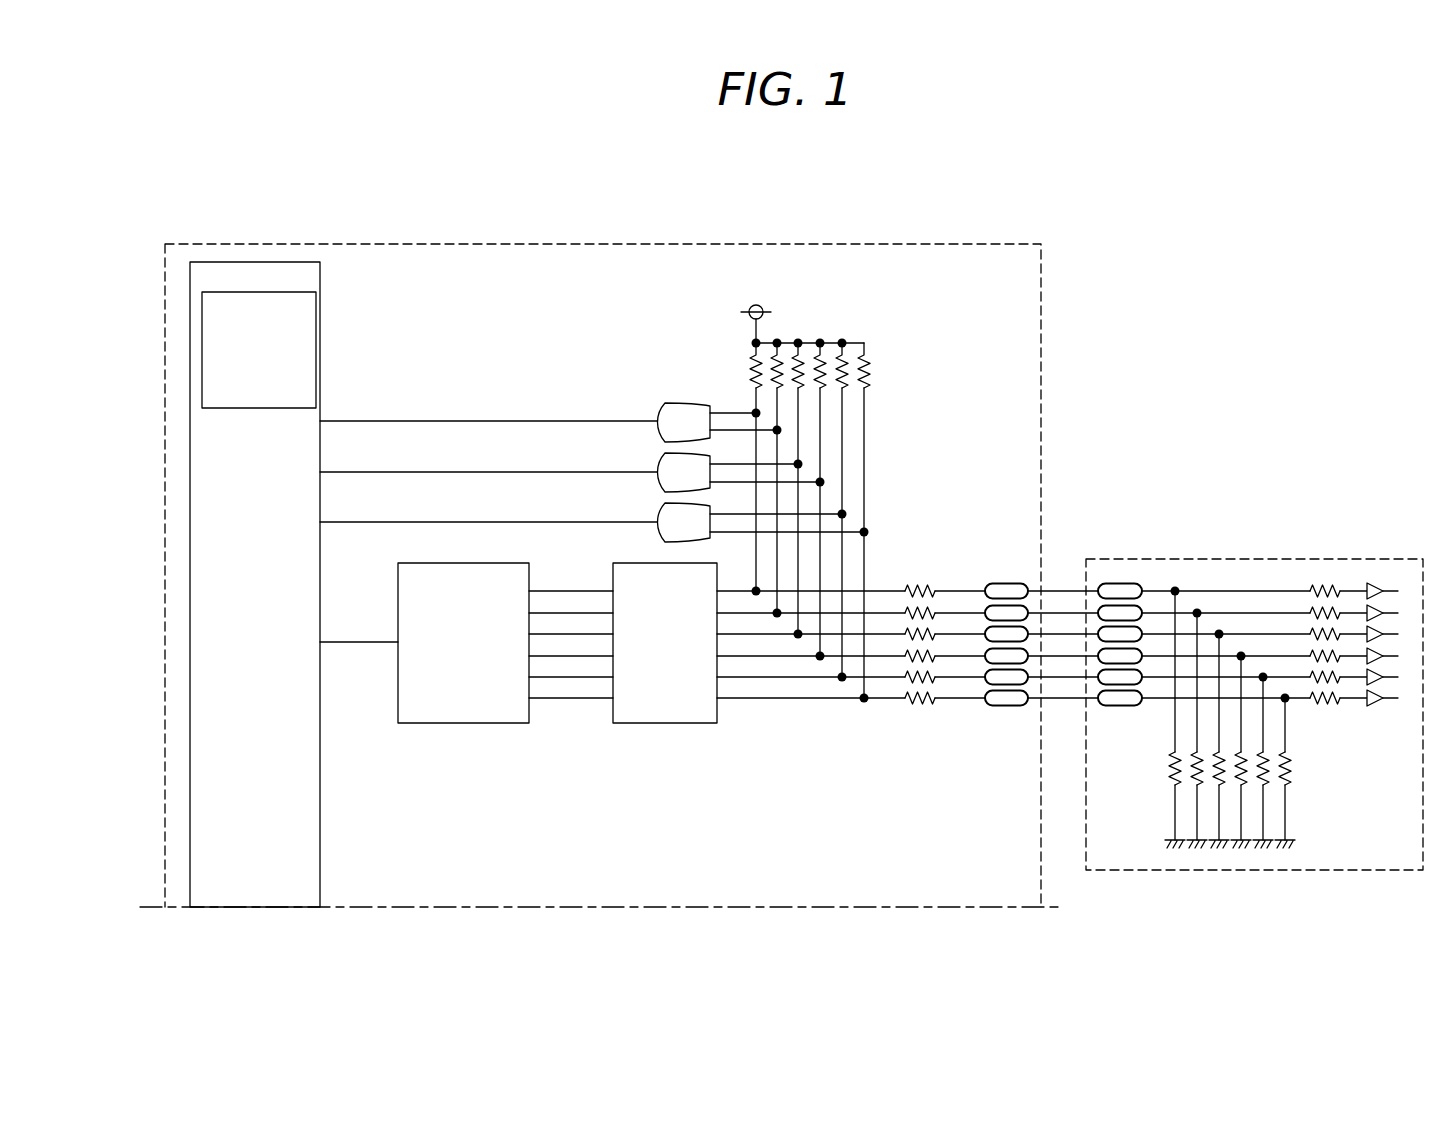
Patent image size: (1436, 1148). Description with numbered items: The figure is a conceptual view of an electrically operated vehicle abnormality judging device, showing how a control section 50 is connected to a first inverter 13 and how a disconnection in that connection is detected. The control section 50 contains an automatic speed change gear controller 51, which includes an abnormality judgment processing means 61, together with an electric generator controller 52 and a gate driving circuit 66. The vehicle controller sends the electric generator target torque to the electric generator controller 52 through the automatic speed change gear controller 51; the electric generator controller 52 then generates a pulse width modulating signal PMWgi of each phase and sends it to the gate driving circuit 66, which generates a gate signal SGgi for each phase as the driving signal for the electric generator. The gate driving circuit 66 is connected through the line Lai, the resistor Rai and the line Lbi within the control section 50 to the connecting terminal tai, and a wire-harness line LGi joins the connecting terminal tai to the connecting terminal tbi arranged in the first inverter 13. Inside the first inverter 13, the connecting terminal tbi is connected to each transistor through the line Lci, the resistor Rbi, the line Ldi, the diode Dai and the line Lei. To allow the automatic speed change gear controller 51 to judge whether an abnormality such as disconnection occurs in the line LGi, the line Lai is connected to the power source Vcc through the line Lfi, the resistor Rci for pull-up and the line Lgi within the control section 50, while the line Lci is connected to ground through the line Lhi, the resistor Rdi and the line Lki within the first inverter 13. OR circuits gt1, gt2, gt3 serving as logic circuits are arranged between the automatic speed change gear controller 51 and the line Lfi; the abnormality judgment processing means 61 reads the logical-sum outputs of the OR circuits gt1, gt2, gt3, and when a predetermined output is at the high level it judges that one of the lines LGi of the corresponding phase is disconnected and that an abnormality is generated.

The control section 50 is at (691, 237).
The automatic speed change gear controller 51 is at (322, 286).
The abnormality judgment processing means 61 is at (258, 292).
The electric generator controller 52 is at (505, 724).
The gate driving circuit 66 is at (695, 724).
The first inverter 13 is at (1279, 508).
The power source Vcc is at (739, 324).
The OR circuit gt1 is at (663, 403).
The OR circuit gt2 is at (666, 455).
The OR circuit gt3 is at (666, 502).
The line Lgi is at (866, 343).
The resistor for pull-up Rci is at (868, 365).
The line Lfi is at (866, 450).
The pulse width modulating signal PMWgi is at (571, 631).
The gate signal SGgi is at (790, 659).
The line Lai is at (821, 700).
The resistor Rai is at (919, 700).
The line Lbi is at (962, 700).
The connecting terminal tai is at (1008, 583).
The line LGi is at (1068, 591).
The connecting terminal tbi is at (1128, 583).
The line Lci is at (1238, 591).
The resistor Rbi is at (1325, 591).
The line Ldi is at (1356, 700).
The diode Dai is at (1375, 591).
The line Lei is at (1392, 700).
The line Lhi is at (1175, 732).
The resistor Rdi is at (1171, 759).
The line Lki is at (1175, 807).